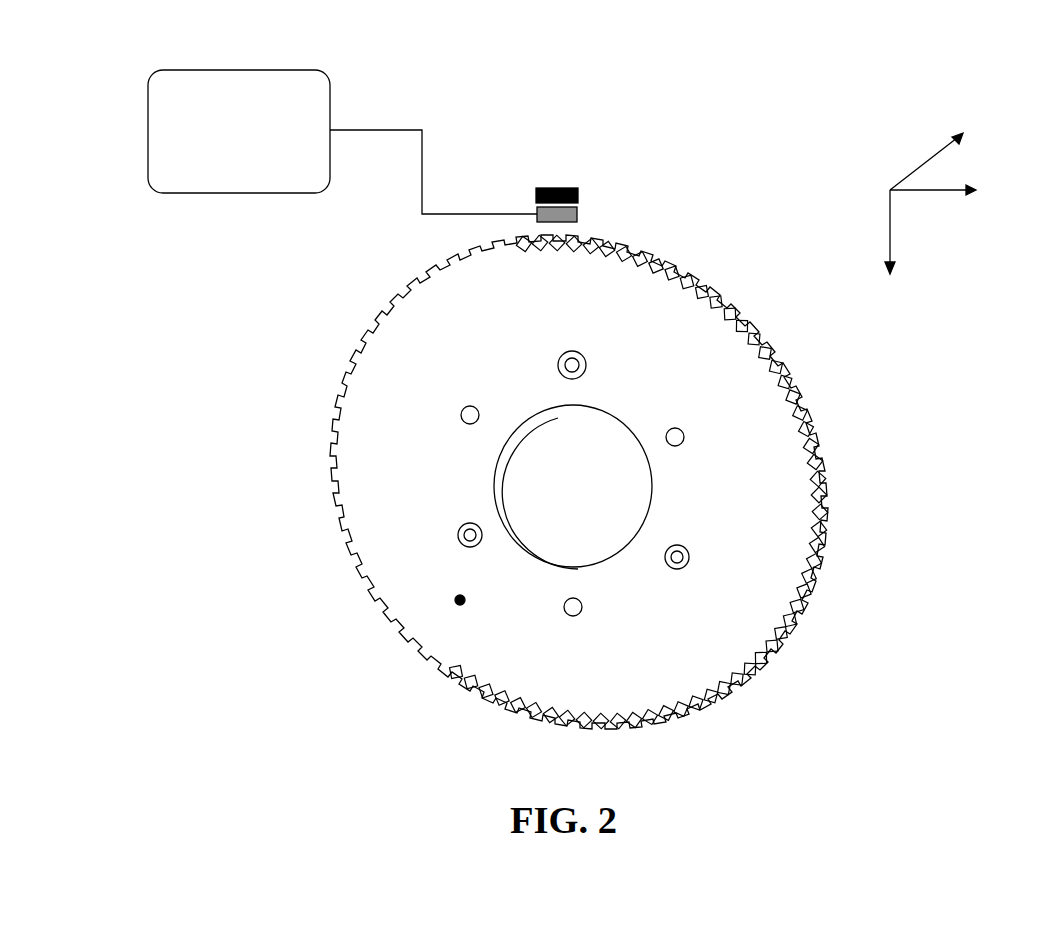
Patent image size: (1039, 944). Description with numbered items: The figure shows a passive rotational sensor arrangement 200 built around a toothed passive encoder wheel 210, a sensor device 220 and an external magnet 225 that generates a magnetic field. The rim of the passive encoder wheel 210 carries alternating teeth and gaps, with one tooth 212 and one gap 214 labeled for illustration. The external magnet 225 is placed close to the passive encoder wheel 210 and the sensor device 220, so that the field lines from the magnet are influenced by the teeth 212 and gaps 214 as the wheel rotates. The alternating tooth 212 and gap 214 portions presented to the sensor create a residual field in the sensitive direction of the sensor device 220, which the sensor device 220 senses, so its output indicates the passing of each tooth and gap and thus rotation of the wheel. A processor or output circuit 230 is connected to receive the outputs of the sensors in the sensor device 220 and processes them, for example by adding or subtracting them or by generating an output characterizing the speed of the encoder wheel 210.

The passive rotational sensor arrangement 200 is at (965, 30).
The passive encoder wheel 210 is at (460, 600).
The tooth 212 is at (657, 255).
The gap 214 is at (688, 270).
The sensor device 220 is at (567, 215).
The external magnet 225 is at (556, 187).
The processor or output circuit 230 is at (302, 70).